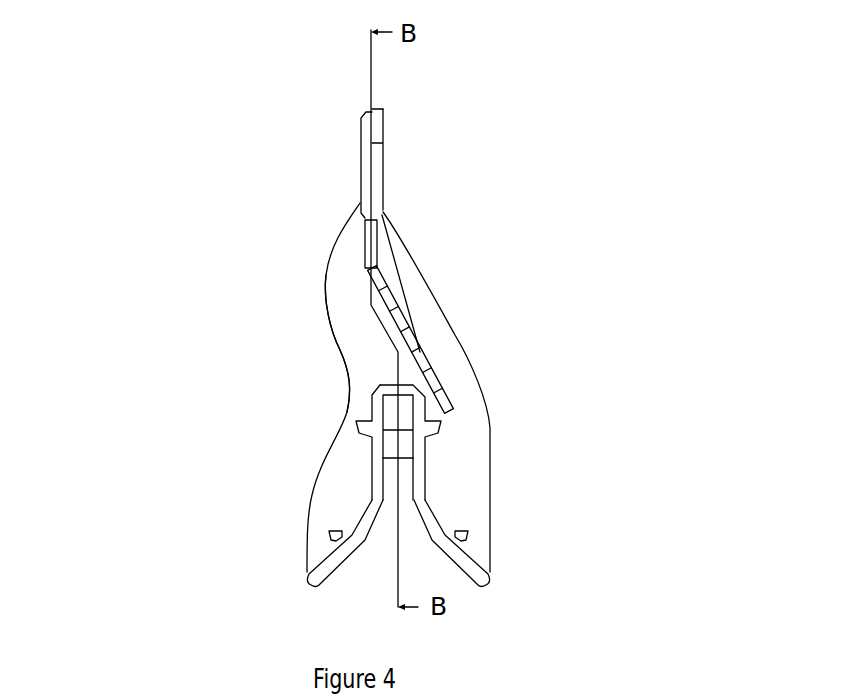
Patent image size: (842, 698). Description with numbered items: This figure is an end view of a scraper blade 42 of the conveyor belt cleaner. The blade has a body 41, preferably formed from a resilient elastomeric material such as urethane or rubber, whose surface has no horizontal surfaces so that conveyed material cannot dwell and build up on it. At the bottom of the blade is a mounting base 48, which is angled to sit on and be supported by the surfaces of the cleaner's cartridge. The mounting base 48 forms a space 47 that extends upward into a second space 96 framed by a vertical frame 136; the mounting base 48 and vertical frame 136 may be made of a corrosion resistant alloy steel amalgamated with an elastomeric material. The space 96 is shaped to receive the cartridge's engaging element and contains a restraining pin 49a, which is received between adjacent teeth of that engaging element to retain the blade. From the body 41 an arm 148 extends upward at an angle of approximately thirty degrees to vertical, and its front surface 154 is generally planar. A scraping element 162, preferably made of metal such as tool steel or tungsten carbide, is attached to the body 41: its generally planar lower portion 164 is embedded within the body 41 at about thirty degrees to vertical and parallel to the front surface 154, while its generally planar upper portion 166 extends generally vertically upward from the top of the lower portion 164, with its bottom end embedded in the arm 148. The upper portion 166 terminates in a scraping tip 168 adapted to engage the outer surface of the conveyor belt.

The body 41 is at (465, 378).
The scraper blade 42 is at (308, 269).
The space 47 is at (390, 550).
The mounting base 48 is at (447, 550).
The restraining pin 49a is at (405, 440).
The space 96 is at (403, 471).
The vertical frame 136 is at (372, 425).
The arm 148 is at (345, 317).
The front surface 154 is at (420, 268).
The scraping element 162 is at (392, 166).
The lower portion 164 is at (420, 352).
The upper portion 166 is at (371, 164).
The scraping tip 168 is at (372, 109).